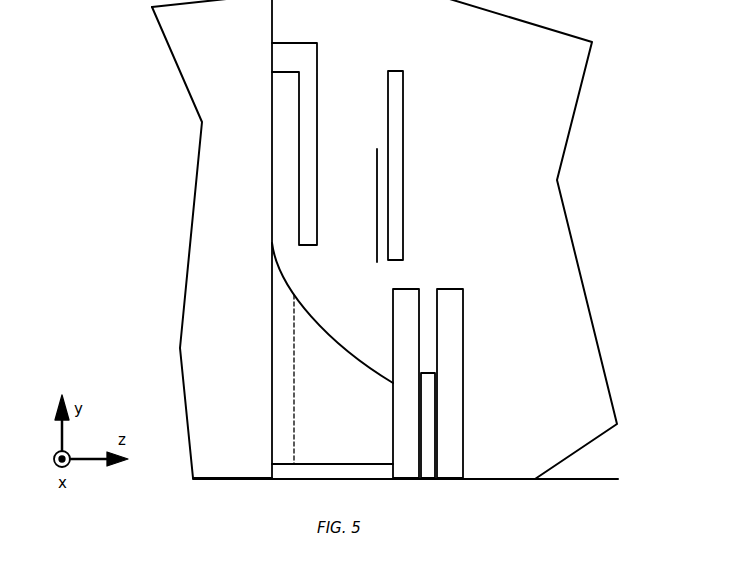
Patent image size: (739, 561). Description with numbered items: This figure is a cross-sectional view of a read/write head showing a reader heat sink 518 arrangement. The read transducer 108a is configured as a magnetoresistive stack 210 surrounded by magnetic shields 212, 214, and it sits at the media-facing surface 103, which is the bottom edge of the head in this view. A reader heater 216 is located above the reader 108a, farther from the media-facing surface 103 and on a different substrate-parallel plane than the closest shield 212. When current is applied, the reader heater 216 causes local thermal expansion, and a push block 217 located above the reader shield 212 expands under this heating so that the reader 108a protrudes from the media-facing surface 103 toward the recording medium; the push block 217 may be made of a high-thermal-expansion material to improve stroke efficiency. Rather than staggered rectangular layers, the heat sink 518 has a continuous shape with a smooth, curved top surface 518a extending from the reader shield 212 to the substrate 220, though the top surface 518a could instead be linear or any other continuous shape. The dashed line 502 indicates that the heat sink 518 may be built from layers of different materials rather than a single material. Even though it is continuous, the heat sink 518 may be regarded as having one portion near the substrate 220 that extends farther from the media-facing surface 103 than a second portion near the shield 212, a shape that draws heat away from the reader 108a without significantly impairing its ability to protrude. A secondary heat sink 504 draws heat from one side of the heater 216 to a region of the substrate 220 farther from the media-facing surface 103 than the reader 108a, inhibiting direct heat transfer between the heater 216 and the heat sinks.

The read transducer 108a is at (461, 200).
The media-facing surface 103 is at (594, 474).
The substrate 220 is at (224, 470).
The dashed line 502 is at (294, 412).
The reader heat sink 518 is at (332, 455).
The top surface 518a is at (322, 328).
The secondary heat sink 504 is at (317, 45).
The push block 217 is at (388, 97).
The reader heater 216 is at (377, 163).
The magnetic shield 212 is at (393, 318).
The magnetic shield 214 is at (455, 297).
The magnetoresistive stack 210 is at (426, 372).